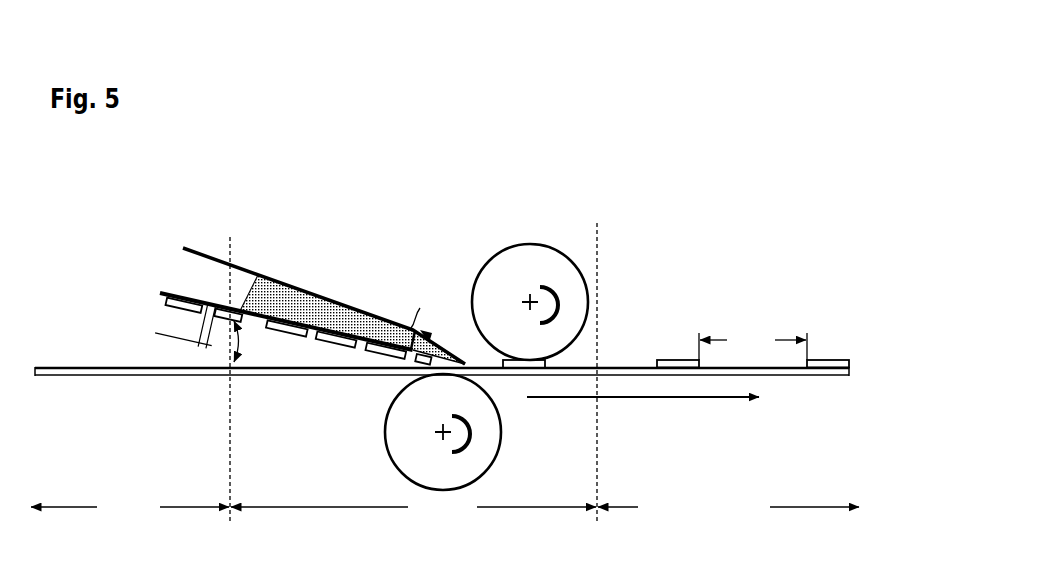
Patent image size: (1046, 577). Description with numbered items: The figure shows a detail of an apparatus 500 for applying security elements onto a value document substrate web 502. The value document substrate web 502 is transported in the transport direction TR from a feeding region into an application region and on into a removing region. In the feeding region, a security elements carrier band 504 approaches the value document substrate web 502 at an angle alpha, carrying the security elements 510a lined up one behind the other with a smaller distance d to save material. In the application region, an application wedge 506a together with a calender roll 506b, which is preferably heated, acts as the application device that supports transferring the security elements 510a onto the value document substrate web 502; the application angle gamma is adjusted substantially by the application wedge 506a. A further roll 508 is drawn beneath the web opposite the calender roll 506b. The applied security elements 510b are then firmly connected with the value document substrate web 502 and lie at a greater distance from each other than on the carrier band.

The apparatus 500 is at (665, 110).
The value document substrate web 502 is at (67, 354).
The security elements carrier band 504 is at (209, 244).
The application wedge 506a is at (345, 299).
The calender roll 506b is at (587, 243).
The counter roller 508 is at (366, 443).
The security elements arranged on the carrier band 510a is at (227, 299).
The security elements applied on the substrate web 510b is at (828, 348).